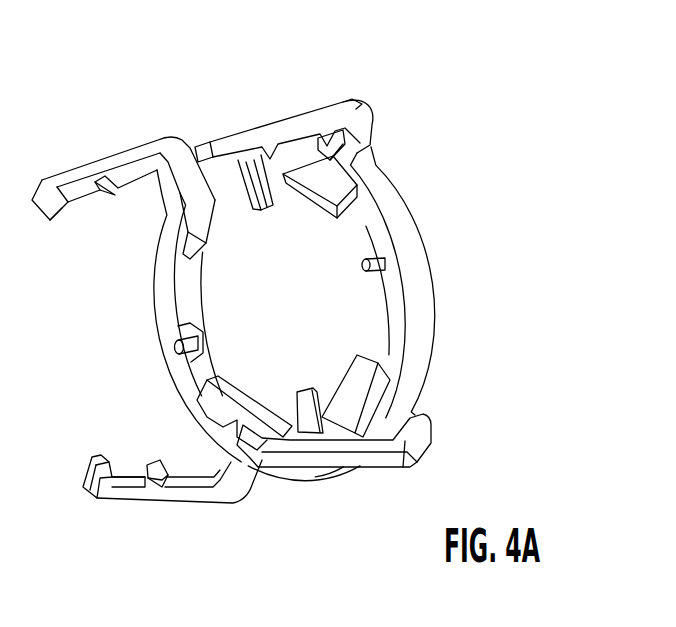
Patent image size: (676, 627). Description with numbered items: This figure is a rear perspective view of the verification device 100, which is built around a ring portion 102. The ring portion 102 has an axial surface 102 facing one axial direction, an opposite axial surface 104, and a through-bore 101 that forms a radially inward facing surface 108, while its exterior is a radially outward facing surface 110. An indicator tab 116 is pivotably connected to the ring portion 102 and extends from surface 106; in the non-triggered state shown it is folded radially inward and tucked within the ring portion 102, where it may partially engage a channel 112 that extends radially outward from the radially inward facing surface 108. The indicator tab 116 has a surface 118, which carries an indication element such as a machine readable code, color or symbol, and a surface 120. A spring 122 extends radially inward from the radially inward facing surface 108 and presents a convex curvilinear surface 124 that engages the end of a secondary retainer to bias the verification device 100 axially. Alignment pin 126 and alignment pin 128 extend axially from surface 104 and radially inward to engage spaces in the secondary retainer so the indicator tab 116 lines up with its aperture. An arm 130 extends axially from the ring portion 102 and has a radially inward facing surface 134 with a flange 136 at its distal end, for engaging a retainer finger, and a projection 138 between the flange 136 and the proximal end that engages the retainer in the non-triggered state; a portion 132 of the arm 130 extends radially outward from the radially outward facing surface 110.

The verification device 100 is at (477, 46).
The through-bore 101 is at (231, 311).
The ring portion 102 is at (378, 170).
The surface 104 is at (387, 295).
The surface 106 is at (406, 200).
The radially inward facing surface 108 is at (193, 282).
The radially outward facing surface 110 is at (421, 283).
The channel 112 is at (181, 223).
The indicator tab 116 is at (370, 386).
The surface 118 is at (312, 204).
The surface 120 is at (322, 156).
The spring 122 is at (243, 168).
The curvilinear surface 124 is at (252, 209).
The alignment pin 126 is at (361, 266).
The alignment pin 128 is at (173, 346).
The arm 130 is at (200, 500).
The portion 132 is at (247, 483).
The radially inward facing surface 134 is at (123, 480).
The flange 136 is at (98, 458).
The projection 138 is at (157, 464).